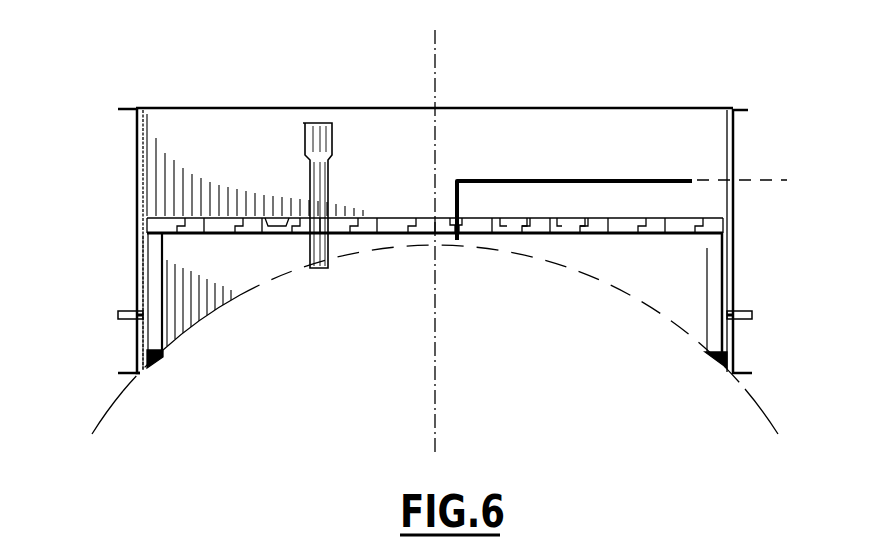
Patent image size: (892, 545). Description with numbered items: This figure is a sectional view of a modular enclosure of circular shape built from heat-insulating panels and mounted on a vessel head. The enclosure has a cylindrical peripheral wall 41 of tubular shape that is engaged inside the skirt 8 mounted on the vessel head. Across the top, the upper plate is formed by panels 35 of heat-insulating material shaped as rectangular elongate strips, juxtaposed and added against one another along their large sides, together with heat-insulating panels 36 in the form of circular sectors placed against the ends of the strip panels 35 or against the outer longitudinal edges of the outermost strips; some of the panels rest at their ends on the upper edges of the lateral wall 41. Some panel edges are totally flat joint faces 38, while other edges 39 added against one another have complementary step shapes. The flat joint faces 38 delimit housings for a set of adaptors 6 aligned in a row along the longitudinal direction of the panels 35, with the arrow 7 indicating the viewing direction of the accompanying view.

The adaptors 6 is at (317, 188).
The flow direction arrow 7 is at (546, 78).
The skirt 8 is at (732, 160).
The panels 35 is at (597, 233).
The panels of heat-insulating material 36 is at (165, 217).
The flat joint faces 38 is at (263, 233).
The edges with complementary step shapes 39 is at (578, 217).
The peripheral wall 41 is at (155, 293).